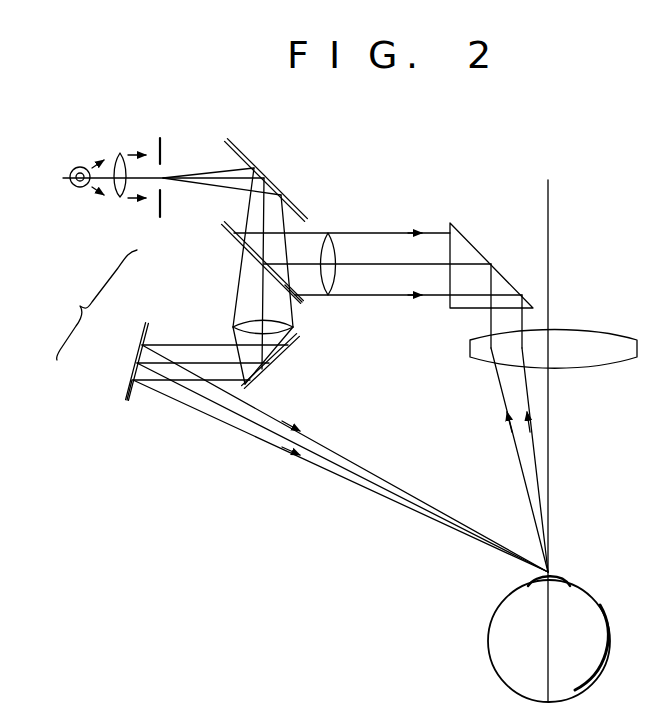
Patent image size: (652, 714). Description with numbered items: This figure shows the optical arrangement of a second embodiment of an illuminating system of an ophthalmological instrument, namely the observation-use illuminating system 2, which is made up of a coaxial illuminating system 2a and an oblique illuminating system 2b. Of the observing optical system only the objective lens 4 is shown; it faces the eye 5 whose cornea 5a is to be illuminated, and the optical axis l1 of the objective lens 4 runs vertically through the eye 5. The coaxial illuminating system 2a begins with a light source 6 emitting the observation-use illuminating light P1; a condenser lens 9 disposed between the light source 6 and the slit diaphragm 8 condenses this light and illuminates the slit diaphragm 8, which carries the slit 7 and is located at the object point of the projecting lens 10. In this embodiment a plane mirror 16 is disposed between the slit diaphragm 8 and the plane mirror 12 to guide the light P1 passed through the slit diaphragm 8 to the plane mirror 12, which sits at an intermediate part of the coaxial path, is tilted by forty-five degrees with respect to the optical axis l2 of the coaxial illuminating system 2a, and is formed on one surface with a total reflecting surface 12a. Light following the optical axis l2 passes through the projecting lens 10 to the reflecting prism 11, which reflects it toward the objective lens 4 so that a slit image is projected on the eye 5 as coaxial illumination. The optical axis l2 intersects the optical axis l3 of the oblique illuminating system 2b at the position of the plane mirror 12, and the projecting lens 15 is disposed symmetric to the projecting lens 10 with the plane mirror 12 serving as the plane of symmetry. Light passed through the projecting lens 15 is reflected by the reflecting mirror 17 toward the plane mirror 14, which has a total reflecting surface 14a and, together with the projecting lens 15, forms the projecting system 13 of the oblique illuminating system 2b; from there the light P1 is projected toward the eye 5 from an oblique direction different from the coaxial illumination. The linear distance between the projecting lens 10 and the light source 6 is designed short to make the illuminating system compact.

The observation-use illuminating system 2 is at (383, 206).
The coaxial illuminating system 2a is at (448, 348).
The oblique illuminating system 2b is at (340, 486).
The objective lens 4 is at (597, 336).
The eye 5 is at (609, 620).
The cornea 5a is at (556, 573).
The light source 6 is at (82, 167).
The slit 7 is at (156, 198).
The slit diaphragm 8 is at (162, 142).
The condenser lens 9 is at (120, 153).
The projecting lens 10 is at (330, 240).
The reflecting prism 11 is at (468, 246).
The plane mirror 12 is at (236, 240).
The total reflecting surface 12a is at (305, 303).
The projecting system 13 is at (89, 305).
The plane mirror 14 is at (130, 364).
The total reflecting surface 14a is at (134, 402).
The projecting lens 15 is at (300, 324).
The plane mirror 16 is at (245, 156).
The reflecting mirror 17 is at (283, 360).
The optical axis l1 is at (550, 440).
The optical axis l2 is at (400, 266).
The optical axis l3 is at (262, 297).
The observation-use illuminating light P1 is at (400, 300).